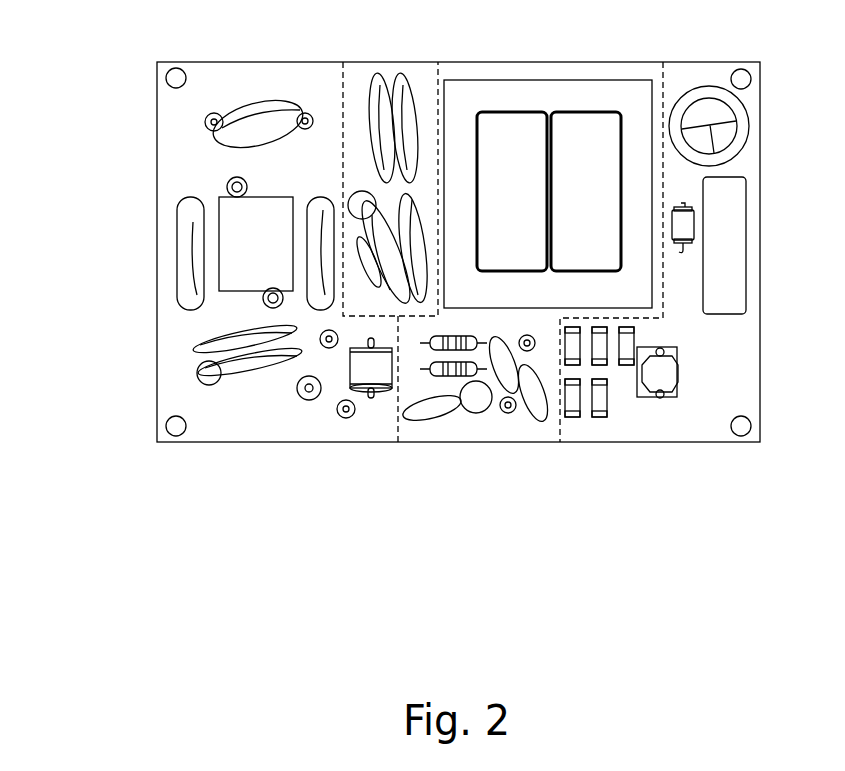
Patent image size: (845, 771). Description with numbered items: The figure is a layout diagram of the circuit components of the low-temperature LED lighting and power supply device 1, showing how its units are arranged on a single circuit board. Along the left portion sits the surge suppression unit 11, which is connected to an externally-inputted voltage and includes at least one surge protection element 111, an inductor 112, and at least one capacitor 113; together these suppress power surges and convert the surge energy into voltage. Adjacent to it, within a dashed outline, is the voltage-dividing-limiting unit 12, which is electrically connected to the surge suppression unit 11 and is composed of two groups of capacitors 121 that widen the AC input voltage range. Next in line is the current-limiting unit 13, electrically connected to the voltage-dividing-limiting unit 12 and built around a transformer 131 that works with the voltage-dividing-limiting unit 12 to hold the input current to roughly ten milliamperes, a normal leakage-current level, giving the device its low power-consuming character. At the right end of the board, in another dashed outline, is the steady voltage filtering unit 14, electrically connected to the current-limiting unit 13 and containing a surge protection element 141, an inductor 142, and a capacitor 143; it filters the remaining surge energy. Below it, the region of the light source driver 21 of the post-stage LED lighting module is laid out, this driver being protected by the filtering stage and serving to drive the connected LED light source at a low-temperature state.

The low-temperature LED lighting and power supply device 1 is at (117, 478).
The surge suppression unit 11 is at (233, 418).
The surge protection element 111 is at (210, 372).
The inductor 112 is at (230, 210).
The capacitor 113 is at (183, 240).
The voltage-dividing-limiting unit 12 is at (365, 75).
The capacitors 121 is at (395, 95).
The current-limiting unit 13 is at (560, 156).
The transformer 131 is at (598, 95).
The steady voltage filtering unit 14 is at (755, 160).
The surge protection element 141 is at (688, 232).
The inductor 142 is at (735, 222).
The capacitor 143 is at (742, 125).
The light source driver 21 is at (692, 410).